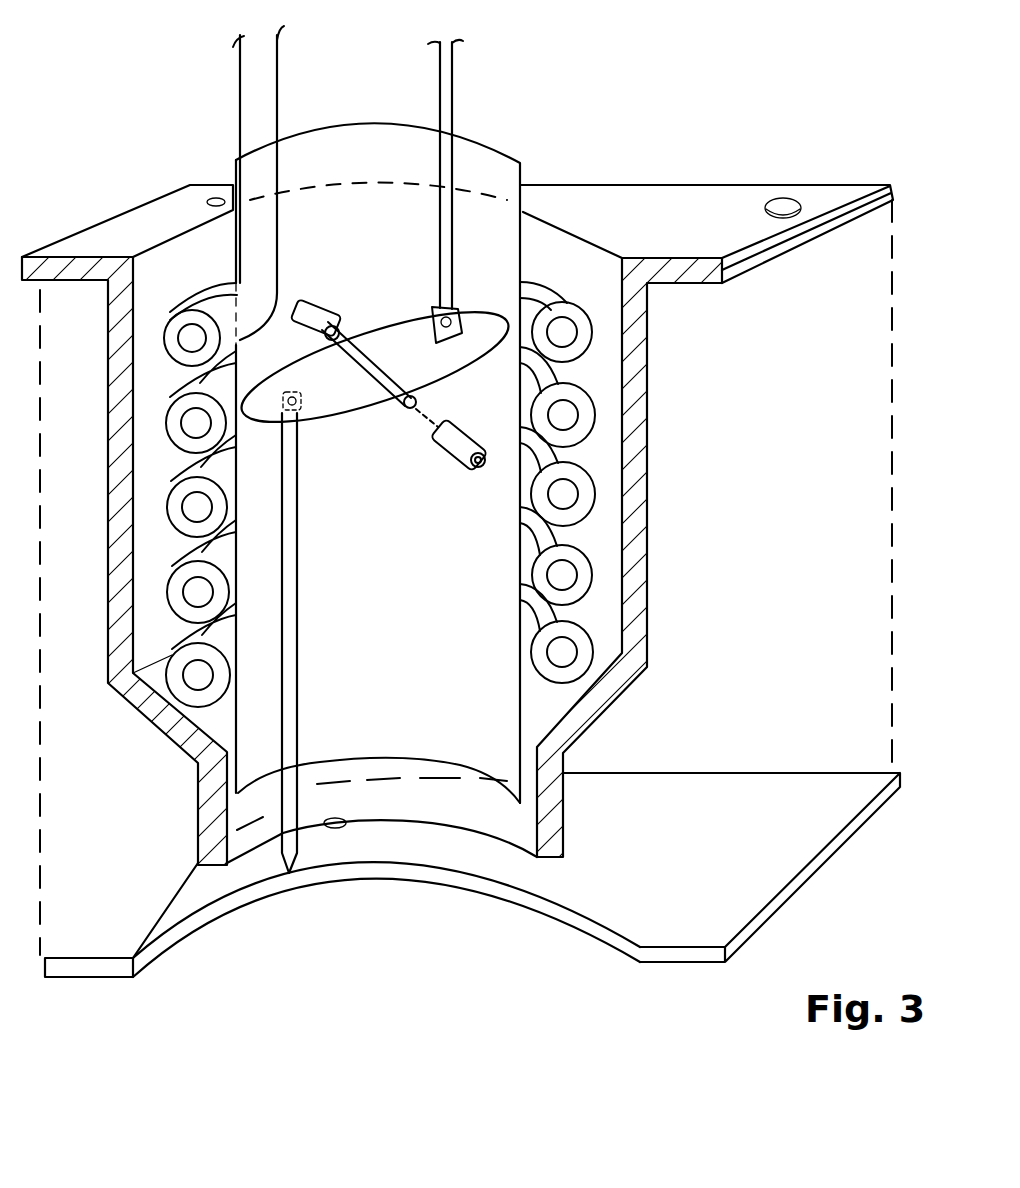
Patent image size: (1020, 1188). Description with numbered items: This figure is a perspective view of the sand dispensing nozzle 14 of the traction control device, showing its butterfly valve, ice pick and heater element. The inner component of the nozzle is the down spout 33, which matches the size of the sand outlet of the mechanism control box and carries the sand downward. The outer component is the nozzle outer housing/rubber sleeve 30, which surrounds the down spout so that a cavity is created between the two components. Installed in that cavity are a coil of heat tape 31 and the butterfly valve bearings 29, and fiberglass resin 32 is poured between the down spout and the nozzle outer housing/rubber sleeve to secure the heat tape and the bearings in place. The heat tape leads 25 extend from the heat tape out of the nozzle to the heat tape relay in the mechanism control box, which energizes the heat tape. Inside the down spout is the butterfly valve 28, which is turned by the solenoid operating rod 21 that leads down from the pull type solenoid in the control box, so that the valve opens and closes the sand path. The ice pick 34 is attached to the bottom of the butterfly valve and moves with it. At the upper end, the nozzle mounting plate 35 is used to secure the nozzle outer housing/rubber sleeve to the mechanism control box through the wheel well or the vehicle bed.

The sand dispensing nozzle 14 is at (677, 222).
The solenoid operating rod 21 is at (455, 78).
The heat tape leads 25 is at (280, 97).
The butterfly valve 28 is at (358, 493).
The butterfly valve bearings 29 is at (323, 308).
The nozzle outer housing/rubber sleeve 30 is at (647, 395).
The heat tape 31 is at (563, 575).
The fiberglass resin 32 is at (185, 270).
The down spout 33 is at (520, 173).
The ice pick 34 is at (298, 722).
The nozzle mounting plate 35 is at (810, 877).